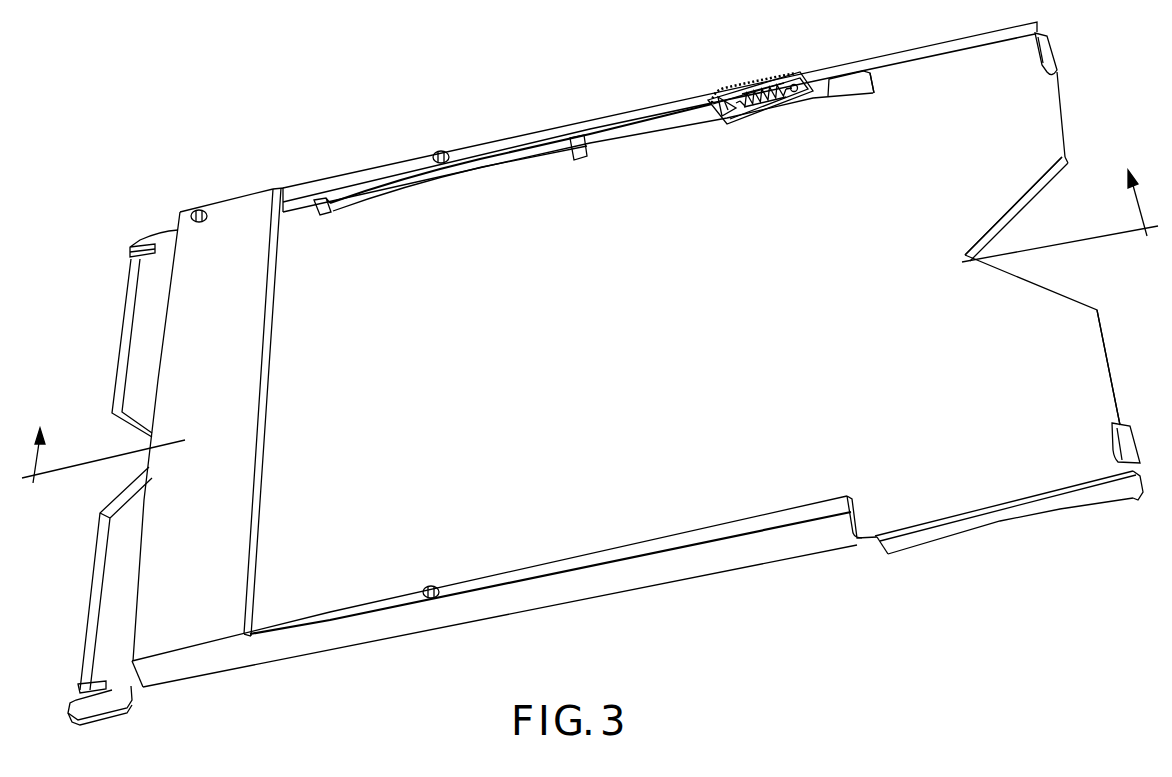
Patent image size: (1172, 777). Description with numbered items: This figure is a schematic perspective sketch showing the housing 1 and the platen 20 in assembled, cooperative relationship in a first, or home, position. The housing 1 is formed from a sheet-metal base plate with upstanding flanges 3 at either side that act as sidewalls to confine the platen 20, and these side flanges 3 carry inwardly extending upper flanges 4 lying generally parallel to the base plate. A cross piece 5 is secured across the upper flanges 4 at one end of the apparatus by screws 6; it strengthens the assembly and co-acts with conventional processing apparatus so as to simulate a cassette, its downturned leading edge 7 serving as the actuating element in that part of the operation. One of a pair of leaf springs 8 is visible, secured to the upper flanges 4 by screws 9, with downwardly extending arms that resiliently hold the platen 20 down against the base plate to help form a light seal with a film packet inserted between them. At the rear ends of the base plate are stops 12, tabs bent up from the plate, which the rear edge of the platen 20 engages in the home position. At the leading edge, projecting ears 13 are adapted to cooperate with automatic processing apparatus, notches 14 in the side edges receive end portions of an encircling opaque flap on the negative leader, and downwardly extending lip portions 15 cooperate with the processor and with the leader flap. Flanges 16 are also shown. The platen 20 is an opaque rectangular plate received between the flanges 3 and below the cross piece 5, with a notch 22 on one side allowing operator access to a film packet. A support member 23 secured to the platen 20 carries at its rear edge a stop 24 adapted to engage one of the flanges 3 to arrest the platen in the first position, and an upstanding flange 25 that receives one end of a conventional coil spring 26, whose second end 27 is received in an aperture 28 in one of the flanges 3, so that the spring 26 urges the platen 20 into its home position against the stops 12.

The housing 1 is at (749, 581).
The upstanding flanges 3 is at (812, 90).
The upper flanges 4 is at (668, 96).
The cross piece 5 is at (222, 508).
The screws 6 is at (200, 209).
The downturned leading edge 7 is at (120, 688).
The leaf springs 8 is at (564, 154).
The screws 9 is at (443, 151).
The stops 12 is at (1057, 54).
The projecting ears 13 is at (144, 240).
The notches 14 is at (128, 255).
The lip portions 15 is at (120, 373).
The flange 16 is at (948, 46).
The platen 20 is at (1100, 346).
The notch 22 is at (1030, 202).
The support member 23 is at (876, 99).
The stop 24 is at (852, 72).
The upstanding flange 25 is at (722, 116).
The coil spring 26 is at (766, 100).
The second end 27 is at (798, 92).
The aperture 28 is at (790, 72).